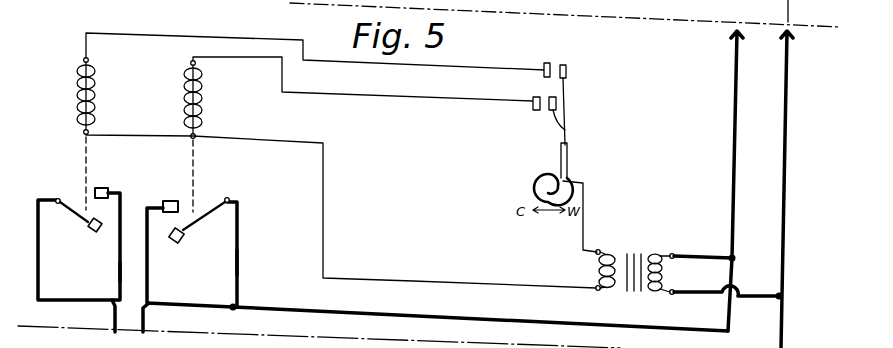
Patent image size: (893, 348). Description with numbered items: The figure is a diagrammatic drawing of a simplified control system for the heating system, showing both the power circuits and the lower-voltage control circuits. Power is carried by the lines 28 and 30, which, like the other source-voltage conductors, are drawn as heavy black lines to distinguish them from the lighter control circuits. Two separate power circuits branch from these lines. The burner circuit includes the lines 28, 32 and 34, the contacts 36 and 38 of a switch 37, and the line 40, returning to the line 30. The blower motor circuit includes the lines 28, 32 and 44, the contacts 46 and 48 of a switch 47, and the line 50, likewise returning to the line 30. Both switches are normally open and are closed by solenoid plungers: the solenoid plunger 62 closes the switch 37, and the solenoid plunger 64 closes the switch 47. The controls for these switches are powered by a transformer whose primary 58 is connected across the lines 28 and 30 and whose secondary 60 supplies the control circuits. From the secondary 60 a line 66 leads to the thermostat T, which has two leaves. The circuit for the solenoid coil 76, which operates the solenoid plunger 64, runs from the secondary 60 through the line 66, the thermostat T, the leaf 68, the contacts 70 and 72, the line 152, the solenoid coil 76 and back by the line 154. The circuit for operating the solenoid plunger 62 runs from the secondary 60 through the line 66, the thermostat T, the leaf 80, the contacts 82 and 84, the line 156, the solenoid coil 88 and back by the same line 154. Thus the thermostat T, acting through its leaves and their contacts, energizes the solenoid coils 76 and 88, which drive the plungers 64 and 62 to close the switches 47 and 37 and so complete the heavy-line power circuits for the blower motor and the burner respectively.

The line 28 is at (733, 163).
The line 30 is at (785, 136).
The line 32 is at (417, 319).
The line 34 is at (238, 262).
The contact 36 is at (174, 242).
The switch 37 is at (209, 202).
The contact 38 is at (180, 200).
The line 40 is at (148, 282).
The line 44 is at (38, 277).
The contact 46 is at (91, 233).
The switch 47 is at (71, 220).
The contact 48 is at (100, 188).
The line 50 is at (117, 268).
The primary 58 is at (662, 276).
The secondary 60 is at (599, 272).
The solenoid plunger 62 is at (195, 162).
The solenoid plunger 64 is at (85, 160).
The line 66 is at (590, 213).
The leaf 68 is at (566, 88).
The contact 70 is at (567, 70).
The contact 72 is at (548, 62).
The solenoid coil 76 is at (93, 95).
The leaf 80 is at (557, 108).
The contact 82 is at (552, 114).
The contact 84 is at (534, 111).
The solenoid coil 88 is at (200, 105).
The line 152 is at (459, 67).
The line 154 is at (413, 280).
The line 156 is at (420, 98).
The thermostat T is at (579, 164).